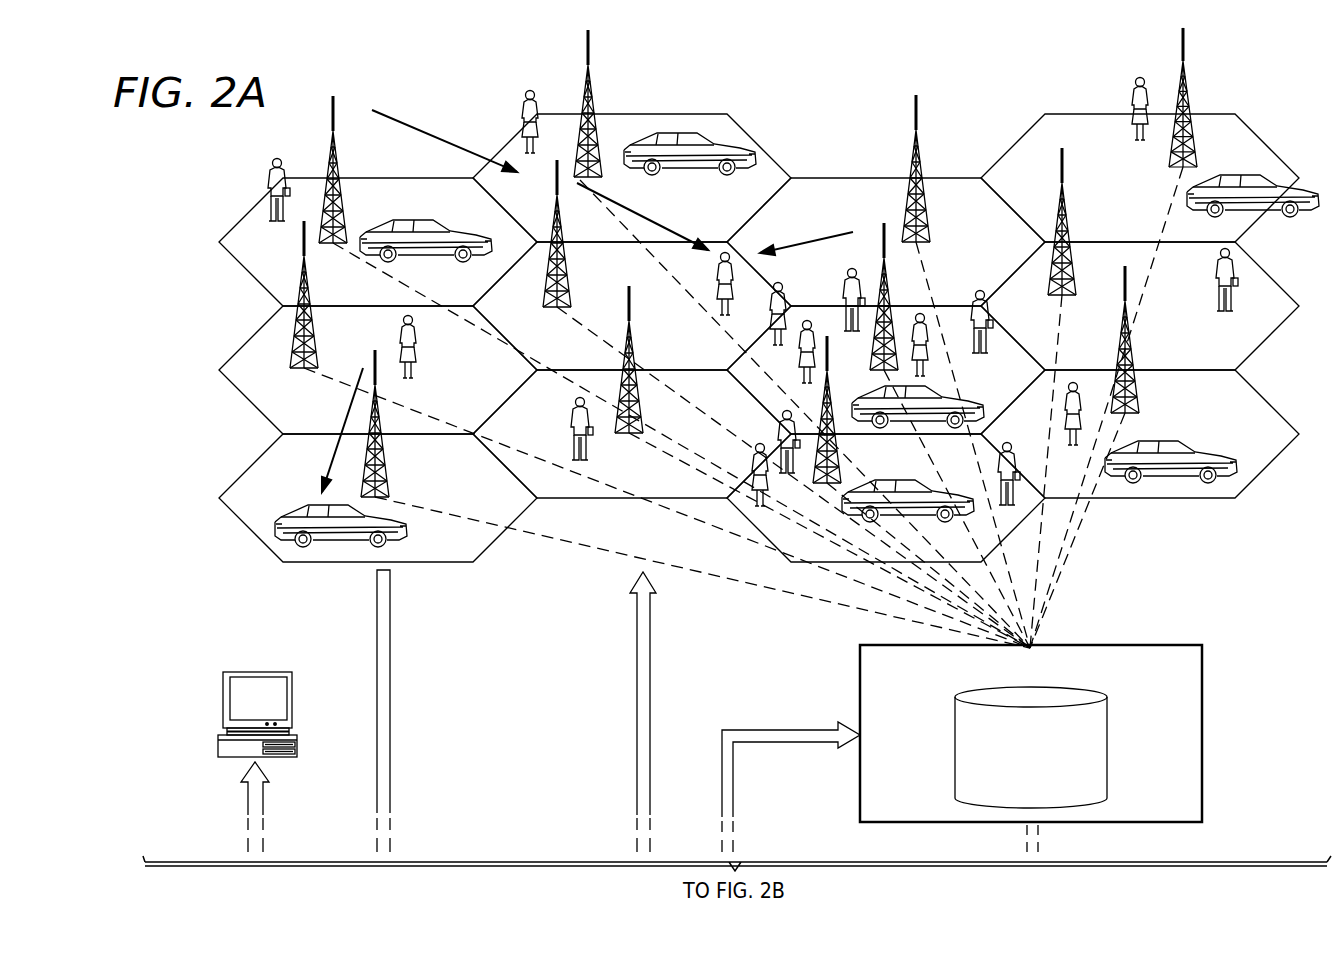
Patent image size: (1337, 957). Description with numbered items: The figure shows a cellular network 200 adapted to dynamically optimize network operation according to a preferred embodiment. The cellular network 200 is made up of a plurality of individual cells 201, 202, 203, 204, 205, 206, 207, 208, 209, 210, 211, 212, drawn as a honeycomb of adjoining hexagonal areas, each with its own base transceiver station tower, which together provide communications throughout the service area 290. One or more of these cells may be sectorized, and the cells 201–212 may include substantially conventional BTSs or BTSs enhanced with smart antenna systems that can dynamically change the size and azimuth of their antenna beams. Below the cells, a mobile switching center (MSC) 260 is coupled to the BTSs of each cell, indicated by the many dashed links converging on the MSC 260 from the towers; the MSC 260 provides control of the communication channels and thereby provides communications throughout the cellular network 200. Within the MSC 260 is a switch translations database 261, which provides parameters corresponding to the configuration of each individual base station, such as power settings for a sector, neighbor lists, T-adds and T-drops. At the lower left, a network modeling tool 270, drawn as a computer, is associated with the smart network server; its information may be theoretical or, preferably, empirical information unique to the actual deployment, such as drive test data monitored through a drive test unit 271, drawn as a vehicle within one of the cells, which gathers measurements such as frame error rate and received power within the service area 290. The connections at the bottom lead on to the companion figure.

The cellular network 200 is at (199, 207).
The cell 201 is at (365, 298).
The cell 202 is at (467, 393).
The cell 203 is at (467, 482).
The cell 204 is at (727, 213).
The cell 205 is at (690, 343).
The cell 206 is at (542, 433).
The cell 207 is at (998, 257).
The cell 208 is at (1015, 390).
The cell 209 is at (913, 465).
The cell 210 is at (1150, 135).
The cell 211 is at (1203, 345).
The cell 212 is at (1227, 416).
The mobile switching center 260 is at (1063, 733).
The switch translations database 261 is at (1107, 745).
The network modeling tool 270 is at (222, 700).
The drive test unit 271 is at (307, 503).
The service area 290 is at (1213, 115).